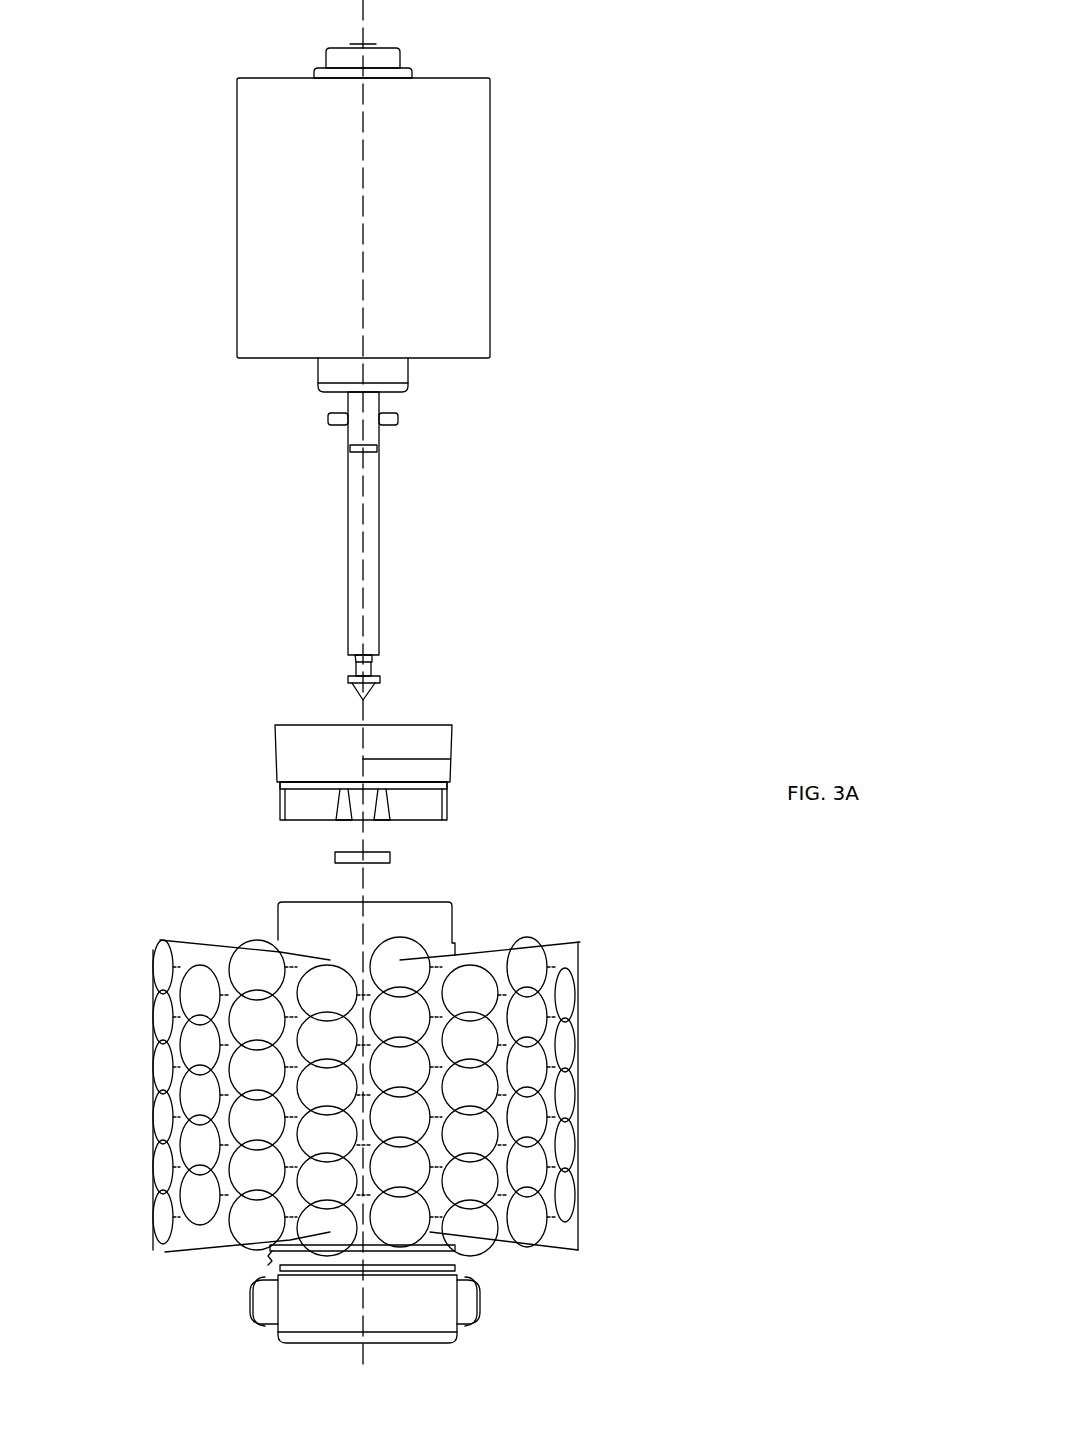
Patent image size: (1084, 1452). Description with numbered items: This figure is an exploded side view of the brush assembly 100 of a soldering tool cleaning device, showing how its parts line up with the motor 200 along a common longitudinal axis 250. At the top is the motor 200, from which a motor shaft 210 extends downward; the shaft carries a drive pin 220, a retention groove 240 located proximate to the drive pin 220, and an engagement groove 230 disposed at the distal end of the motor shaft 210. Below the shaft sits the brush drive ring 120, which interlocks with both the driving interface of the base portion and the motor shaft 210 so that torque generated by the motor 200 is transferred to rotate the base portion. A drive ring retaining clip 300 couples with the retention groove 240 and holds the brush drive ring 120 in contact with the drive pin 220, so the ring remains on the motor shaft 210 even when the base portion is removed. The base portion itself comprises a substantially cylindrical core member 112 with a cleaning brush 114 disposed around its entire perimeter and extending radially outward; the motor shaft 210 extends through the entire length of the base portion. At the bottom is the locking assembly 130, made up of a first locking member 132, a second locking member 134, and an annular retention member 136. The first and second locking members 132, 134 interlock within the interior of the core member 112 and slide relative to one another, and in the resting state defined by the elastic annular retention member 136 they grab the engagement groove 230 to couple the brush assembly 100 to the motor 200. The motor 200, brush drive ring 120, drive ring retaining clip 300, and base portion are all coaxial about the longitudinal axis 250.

The brush assembly 100 is at (451, 1062).
The core member 112 is at (444, 911).
The cleaning brush 114 is at (416, 1083).
The brush drive ring 120 is at (439, 760).
The locking assembly 130 is at (410, 1304).
The first locking member 132 is at (206, 1307).
The second locking member 134 is at (514, 1320).
The annular retention member 136 is at (275, 1272).
The motor 200 is at (417, 372).
The motor shaft 210 is at (444, 523).
The drive pin 220 is at (434, 399).
The engagement groove 230 is at (438, 654).
The retention groove 240 is at (281, 432).
The longitudinal axis 250 is at (318, 218).
The drive ring retaining clip 300 is at (438, 847).